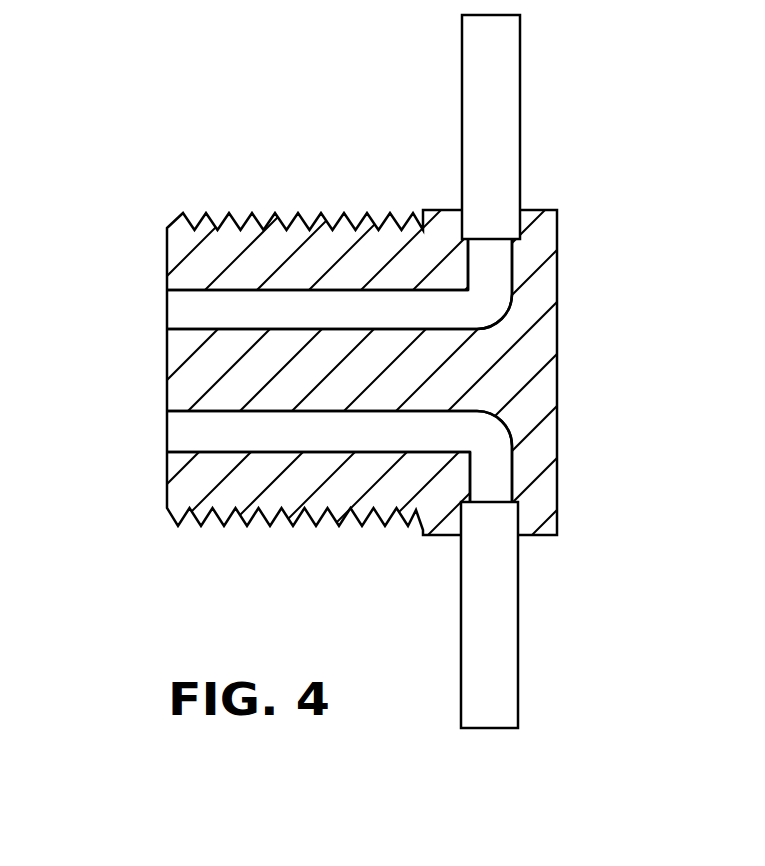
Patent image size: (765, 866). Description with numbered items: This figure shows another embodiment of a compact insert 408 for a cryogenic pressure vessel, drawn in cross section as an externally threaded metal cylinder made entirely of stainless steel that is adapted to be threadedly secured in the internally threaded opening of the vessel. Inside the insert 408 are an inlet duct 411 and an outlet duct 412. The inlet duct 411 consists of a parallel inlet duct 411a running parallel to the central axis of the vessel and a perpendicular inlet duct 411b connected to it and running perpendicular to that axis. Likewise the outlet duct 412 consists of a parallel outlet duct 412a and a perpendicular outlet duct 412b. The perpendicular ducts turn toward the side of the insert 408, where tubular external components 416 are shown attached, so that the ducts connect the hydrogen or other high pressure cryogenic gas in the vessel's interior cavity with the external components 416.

The insert 408 is at (560, 365).
The inlet duct 411 is at (167, 313).
The parallel inlet duct 411a is at (290, 305).
The perpendicular inlet duct 411b is at (498, 278).
The outlet duct 412 is at (167, 437).
The parallel outlet duct 412a is at (335, 443).
The perpendicular outlet duct 412b is at (495, 472).
The external components 416 is at (505, 110).